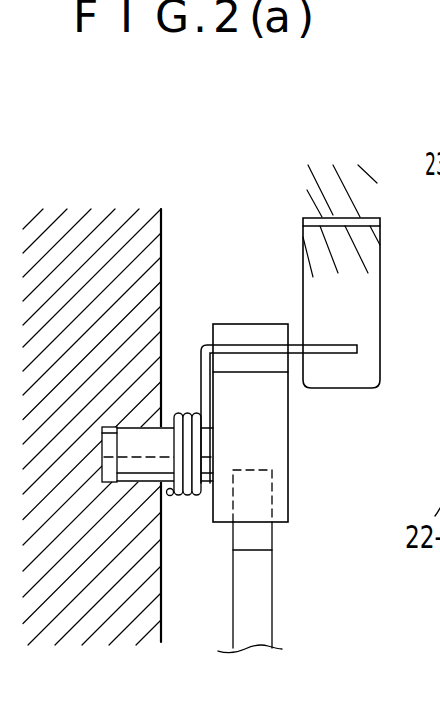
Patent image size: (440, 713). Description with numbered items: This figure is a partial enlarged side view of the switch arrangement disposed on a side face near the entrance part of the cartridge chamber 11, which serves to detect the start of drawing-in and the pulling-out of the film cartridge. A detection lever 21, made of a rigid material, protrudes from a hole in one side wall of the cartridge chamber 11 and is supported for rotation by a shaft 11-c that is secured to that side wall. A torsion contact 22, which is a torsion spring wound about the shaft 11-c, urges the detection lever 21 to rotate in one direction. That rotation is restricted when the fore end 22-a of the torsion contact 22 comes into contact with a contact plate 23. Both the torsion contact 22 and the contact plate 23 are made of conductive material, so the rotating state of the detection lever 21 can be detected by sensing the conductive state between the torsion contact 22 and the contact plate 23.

The cartridge chamber 11 is at (139, 222).
The shaft 11-c is at (163, 445).
The detection lever 21 is at (278, 435).
The torsion contact 22 is at (185, 497).
The fore end of the torsion contact 22-a is at (352, 356).
The contact plate 23 is at (368, 303).